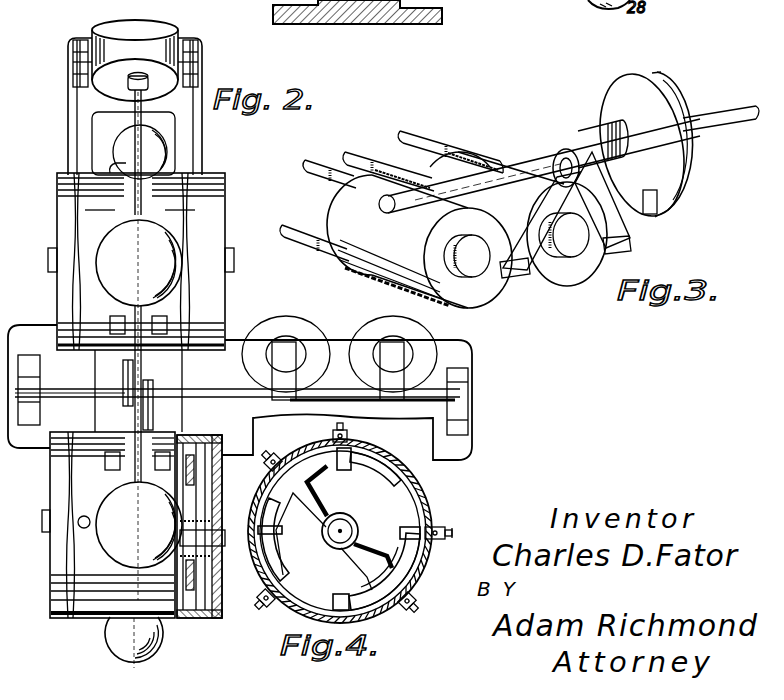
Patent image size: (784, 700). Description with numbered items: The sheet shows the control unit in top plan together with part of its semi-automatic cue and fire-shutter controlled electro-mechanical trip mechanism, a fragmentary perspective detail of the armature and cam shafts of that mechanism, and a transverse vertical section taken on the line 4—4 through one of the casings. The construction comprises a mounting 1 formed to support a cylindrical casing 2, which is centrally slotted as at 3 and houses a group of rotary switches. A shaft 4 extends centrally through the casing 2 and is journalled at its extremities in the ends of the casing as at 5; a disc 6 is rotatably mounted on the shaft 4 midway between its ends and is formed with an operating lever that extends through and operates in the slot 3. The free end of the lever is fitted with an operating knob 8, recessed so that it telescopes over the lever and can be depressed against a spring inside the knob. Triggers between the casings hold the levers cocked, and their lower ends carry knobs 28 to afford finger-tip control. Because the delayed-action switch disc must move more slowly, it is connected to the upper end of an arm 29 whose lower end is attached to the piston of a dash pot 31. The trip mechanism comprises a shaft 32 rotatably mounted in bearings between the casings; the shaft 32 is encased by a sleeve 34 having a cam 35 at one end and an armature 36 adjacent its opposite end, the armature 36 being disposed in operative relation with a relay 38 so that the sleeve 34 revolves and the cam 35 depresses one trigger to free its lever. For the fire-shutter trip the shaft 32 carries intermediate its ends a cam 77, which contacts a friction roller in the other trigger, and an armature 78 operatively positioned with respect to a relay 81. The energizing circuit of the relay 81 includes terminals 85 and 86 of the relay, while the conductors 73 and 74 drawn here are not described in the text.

In FIG. 2, the mounting 1 is at (412, 446).
In FIG. 2, the cylindrical casing 2 is at (226, 176).
In FIG. 2, the slot 3 is at (113, 170).
In FIG. 2, the shaft 4 is at (201, 535).
In FIG. 2, the journal 5 is at (239, 27).
In FIG. 2, the disc 6 is at (469, 32).
In FIG. 2, the operating knob 8 is at (139, 410).
In FIG. 2, the knob 28 is at (155, 140).
In FIG. 2, the arm 29 is at (133, 125).
In FIG. 2, the dash pot 31 is at (143, 24).
In FIG. 2, the shaft 32 is at (72, 381).
In FIG. 3, the shaft 32 is at (718, 126).
In FIG. 3, the sleeve 34 is at (568, 136).
In FIG. 2, the cam 35 is at (160, 374).
In FIG. 3, the cam 35 is at (657, 208).
In FIG. 2, the armature 36 is at (292, 335).
In FIG. 3, the armature 36 is at (630, 245).
In FIG. 2, the relay 38 is at (418, 335).
In FIG. 3, the relay 38 is at (562, 283).
In FIG. 3, the rod 73 is at (420, 142).
In FIG. 3, the rod 74 is at (388, 161).
In FIG. 2, the cam 77 is at (127, 405).
In FIG. 3, the cam 77 is at (690, 176).
In FIG. 2, the armature 78 is at (398, 338).
In FIG. 3, the armature 78 is at (517, 277).
In FIG. 2, the relay 81 is at (306, 334).
In FIG. 3, the relay 81 is at (475, 297).
In FIG. 3, the terminal 85 is at (290, 239).
In FIG. 3, the terminal 86 is at (312, 173).